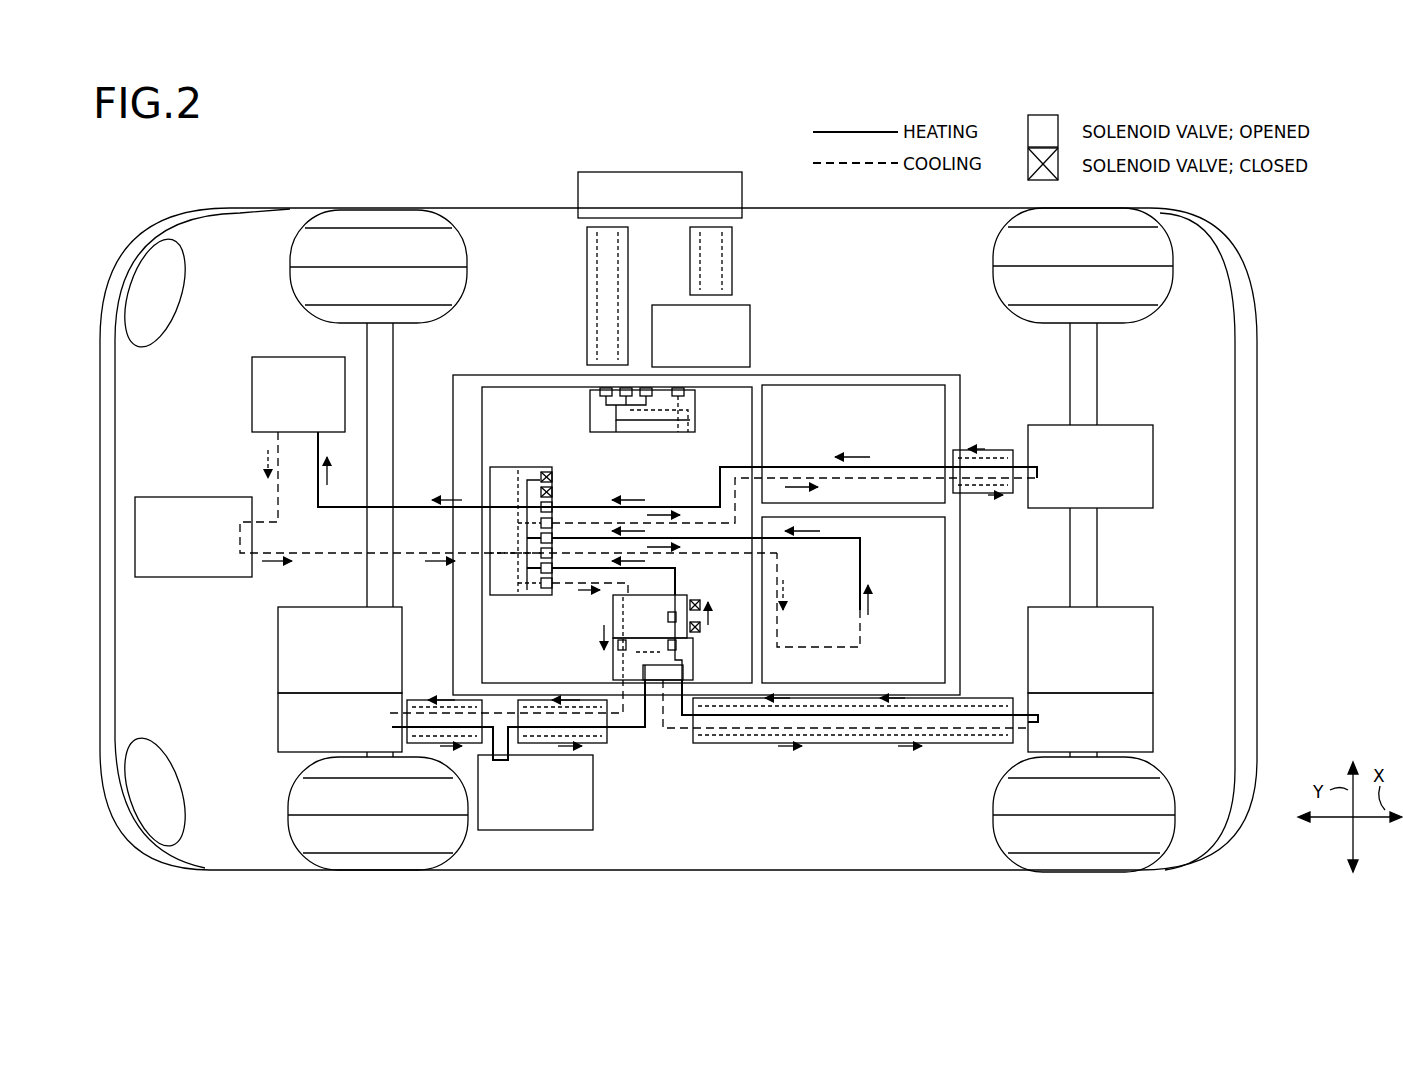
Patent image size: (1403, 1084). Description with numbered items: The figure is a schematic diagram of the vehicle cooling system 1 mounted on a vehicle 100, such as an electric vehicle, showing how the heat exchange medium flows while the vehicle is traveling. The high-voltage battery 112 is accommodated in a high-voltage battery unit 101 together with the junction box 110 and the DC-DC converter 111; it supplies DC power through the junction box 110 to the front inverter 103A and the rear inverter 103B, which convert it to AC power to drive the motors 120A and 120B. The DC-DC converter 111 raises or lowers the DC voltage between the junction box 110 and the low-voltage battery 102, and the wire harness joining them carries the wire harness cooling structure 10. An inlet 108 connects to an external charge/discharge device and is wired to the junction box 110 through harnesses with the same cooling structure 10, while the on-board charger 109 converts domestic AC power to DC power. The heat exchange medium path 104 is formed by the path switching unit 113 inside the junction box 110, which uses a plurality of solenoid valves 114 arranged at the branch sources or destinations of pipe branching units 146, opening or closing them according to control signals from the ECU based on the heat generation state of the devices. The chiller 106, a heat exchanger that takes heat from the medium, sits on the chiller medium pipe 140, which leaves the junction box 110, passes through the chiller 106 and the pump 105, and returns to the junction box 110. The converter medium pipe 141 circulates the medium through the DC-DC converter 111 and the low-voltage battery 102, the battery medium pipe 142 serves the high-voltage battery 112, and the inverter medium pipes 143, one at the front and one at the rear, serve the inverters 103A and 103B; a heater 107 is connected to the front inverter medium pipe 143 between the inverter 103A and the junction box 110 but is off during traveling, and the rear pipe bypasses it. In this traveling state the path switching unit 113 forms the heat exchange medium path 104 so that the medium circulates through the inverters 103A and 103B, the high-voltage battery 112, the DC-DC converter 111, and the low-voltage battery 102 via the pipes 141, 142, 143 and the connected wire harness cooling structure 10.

The vehicle cooling system 1 is at (510, 360).
The wire harness cooling structure 10 is at (587, 245).
The vehicle 100 is at (290, 208).
The high-voltage battery unit 101 is at (860, 373).
The low-voltage battery 102 is at (1135, 425).
The inverter 103A is at (278, 737).
The inverter 103B is at (1153, 720).
The heat exchange medium path 104 is at (638, 492).
The pump 105 is at (160, 497).
The chiller 106 is at (258, 357).
The heater 107 is at (512, 830).
The inlet 108 is at (680, 172).
The charger 109 is at (750, 318).
The junction box 110 is at (486, 381).
The DC-DC converter 111 is at (918, 385).
The high-voltage battery 112 is at (947, 600).
The path switching unit 113 is at (588, 420).
The solenoid valve 114 is at (554, 486).
The motor 120A is at (278, 645).
The motor 120B is at (1153, 653).
The chiller medium pipe 140 is at (410, 500).
The converter medium pipe 141 is at (800, 467).
The battery medium pipe 142 is at (860, 580).
The inverter medium pipe 143 is at (663, 740).
The pipe branching unit 146 is at (528, 470).